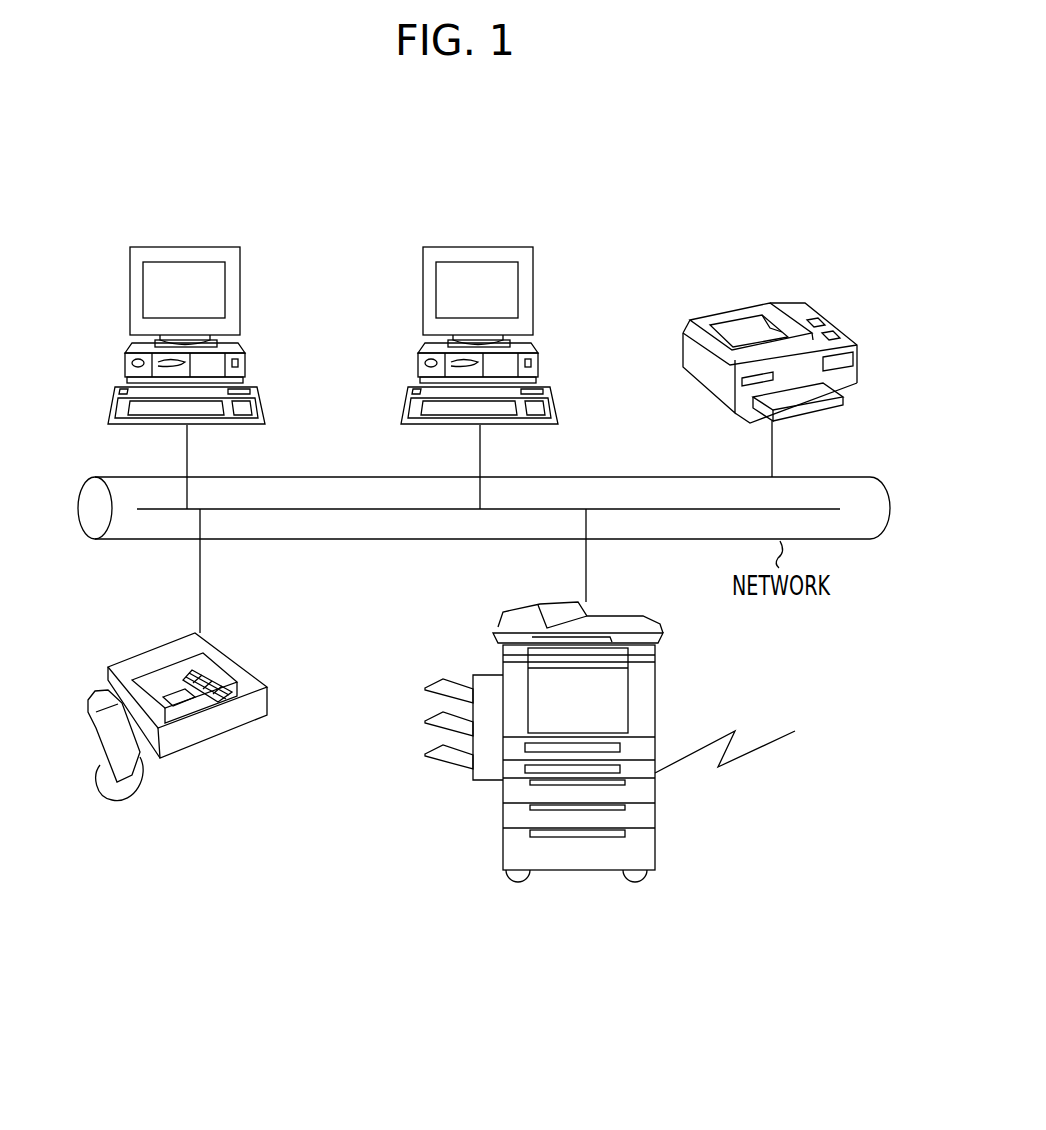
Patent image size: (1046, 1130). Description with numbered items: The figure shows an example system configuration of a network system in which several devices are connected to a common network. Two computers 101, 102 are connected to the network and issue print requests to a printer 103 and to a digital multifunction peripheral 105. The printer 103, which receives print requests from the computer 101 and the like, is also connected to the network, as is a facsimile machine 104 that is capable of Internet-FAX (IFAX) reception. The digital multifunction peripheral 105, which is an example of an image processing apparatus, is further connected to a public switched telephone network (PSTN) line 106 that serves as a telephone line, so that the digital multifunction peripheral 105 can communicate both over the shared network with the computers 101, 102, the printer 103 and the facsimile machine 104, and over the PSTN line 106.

The computer 101 is at (184, 247).
The computer 102 is at (481, 247).
The printer 103 is at (752, 288).
The facsimile machine 104 is at (218, 733).
The digital multifunction peripheral 105 is at (560, 872).
The public switched telephone network (PSTN) line 106 is at (790, 733).